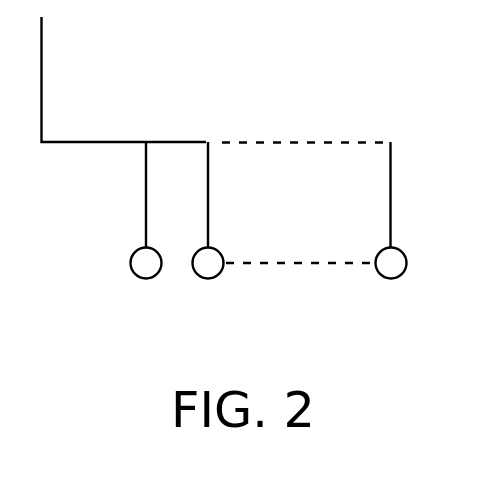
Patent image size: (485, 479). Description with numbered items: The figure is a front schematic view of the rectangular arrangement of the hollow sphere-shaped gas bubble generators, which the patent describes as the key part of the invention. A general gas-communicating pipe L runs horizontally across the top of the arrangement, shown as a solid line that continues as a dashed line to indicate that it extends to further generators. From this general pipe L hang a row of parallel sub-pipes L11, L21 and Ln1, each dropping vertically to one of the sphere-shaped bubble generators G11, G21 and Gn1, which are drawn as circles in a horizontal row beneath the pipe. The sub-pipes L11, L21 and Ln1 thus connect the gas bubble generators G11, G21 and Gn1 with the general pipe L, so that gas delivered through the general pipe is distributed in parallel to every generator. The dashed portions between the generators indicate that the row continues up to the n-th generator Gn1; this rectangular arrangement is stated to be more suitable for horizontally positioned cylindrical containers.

The general gas-communicating pipe L is at (215, 80).
The parallel sub-pipe L11 is at (162, 194).
The parallel sub-pipe L21 is at (224, 194).
The parallel sub-pipe Ln1 is at (406, 194).
The sphere-shaped gas bubble generator G11 is at (153, 277).
The sphere-shaped gas bubble generator G21 is at (283, 277).
The sphere-shaped gas bubble generator Gn1 is at (398, 278).